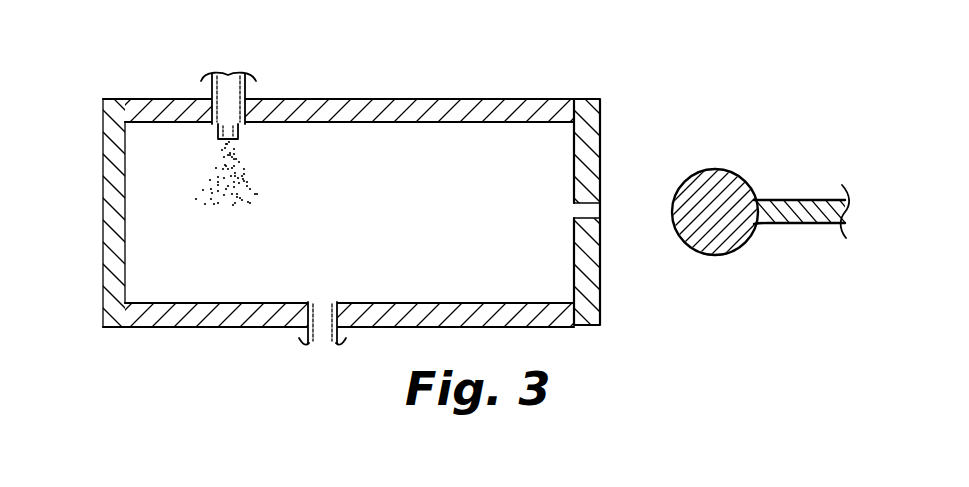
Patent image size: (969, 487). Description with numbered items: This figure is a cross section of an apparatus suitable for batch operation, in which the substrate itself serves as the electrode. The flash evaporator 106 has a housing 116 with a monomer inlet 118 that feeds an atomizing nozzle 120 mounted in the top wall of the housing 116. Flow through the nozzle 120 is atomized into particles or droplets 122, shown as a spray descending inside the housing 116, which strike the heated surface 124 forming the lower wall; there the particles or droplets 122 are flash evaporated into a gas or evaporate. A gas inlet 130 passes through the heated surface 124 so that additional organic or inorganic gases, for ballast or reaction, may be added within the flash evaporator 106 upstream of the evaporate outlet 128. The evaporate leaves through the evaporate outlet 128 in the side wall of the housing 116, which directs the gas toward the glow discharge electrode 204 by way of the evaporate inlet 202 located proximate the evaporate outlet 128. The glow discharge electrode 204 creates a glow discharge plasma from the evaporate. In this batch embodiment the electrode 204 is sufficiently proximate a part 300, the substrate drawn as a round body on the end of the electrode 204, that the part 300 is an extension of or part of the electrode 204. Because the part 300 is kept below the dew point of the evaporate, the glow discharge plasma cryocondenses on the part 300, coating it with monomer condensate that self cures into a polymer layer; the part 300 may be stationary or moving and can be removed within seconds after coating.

The flash evaporator 106 is at (335, 207).
The housing 116 is at (347, 99).
The monomer inlet 118 is at (238, 121).
The atomizing nozzle 120 is at (251, 146).
The particles or droplets 122 is at (213, 207).
The heated surface 124 is at (222, 303).
The evaporate outlet 128 is at (571, 212).
The gas inlet 130 is at (312, 347).
The evaporate inlet 202 is at (579, 223).
The glow discharge electrode 204 is at (814, 201).
The part 300 is at (728, 187).